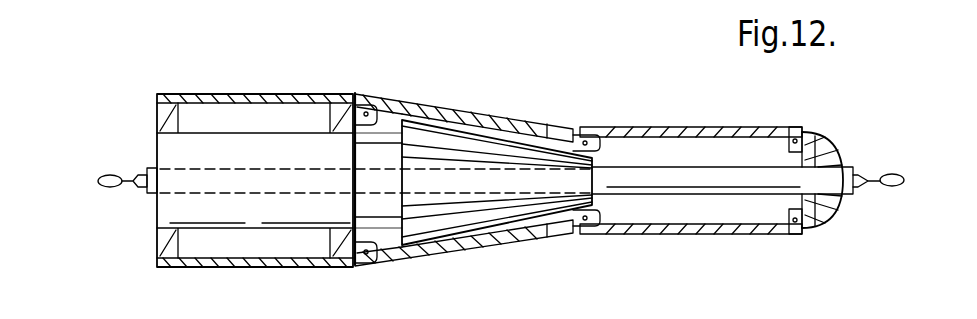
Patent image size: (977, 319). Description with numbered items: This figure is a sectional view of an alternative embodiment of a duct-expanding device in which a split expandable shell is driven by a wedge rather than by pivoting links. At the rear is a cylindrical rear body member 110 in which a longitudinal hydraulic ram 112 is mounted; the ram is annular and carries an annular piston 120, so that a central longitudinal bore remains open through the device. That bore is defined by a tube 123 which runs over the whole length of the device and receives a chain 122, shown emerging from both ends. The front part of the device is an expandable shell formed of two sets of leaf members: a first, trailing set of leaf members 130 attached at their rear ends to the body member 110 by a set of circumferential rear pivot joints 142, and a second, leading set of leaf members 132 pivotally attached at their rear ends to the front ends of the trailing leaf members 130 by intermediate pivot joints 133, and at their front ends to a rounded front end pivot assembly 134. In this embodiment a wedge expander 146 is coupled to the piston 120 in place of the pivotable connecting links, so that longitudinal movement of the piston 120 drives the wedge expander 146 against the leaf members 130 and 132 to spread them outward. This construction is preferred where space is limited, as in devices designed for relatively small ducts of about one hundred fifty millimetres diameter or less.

The cylindrical rear body member 110 is at (273, 93).
The longitudinal hydraulic ram 112 is at (187, 203).
The annular piston 120 is at (383, 210).
The chain 122 is at (98, 181).
The tube 123 is at (152, 168).
The trailing leaf members 130 is at (522, 127).
The leading leaf members 132 is at (702, 128).
The intermediate pivot joints 133 is at (587, 135).
The rounded front end pivot assembly 134 is at (838, 152).
The circumferential rear pivot joints 142 is at (371, 265).
The wedge expander 146 is at (492, 215).